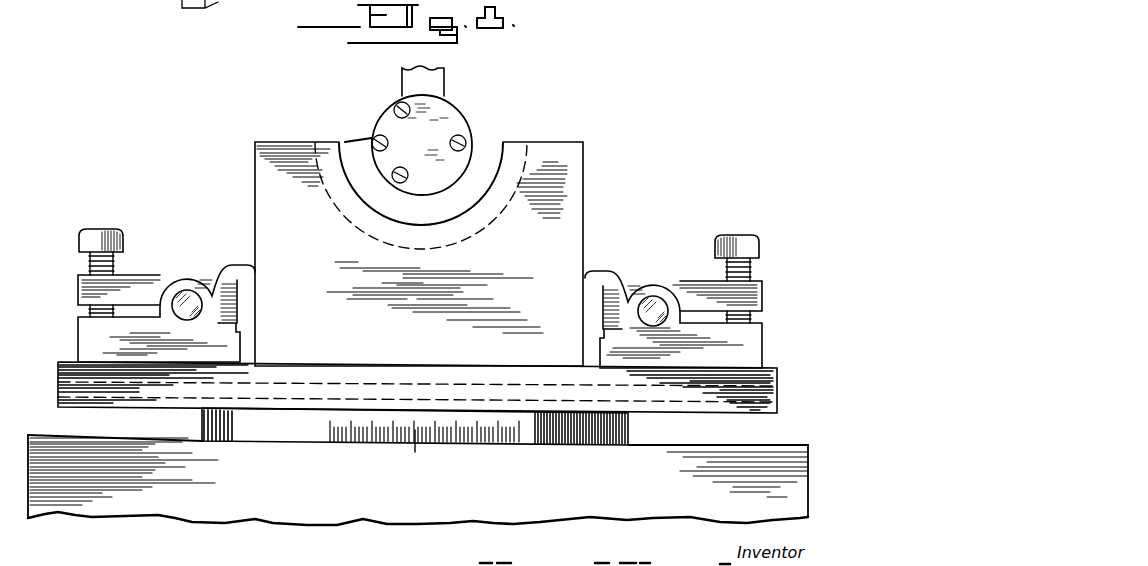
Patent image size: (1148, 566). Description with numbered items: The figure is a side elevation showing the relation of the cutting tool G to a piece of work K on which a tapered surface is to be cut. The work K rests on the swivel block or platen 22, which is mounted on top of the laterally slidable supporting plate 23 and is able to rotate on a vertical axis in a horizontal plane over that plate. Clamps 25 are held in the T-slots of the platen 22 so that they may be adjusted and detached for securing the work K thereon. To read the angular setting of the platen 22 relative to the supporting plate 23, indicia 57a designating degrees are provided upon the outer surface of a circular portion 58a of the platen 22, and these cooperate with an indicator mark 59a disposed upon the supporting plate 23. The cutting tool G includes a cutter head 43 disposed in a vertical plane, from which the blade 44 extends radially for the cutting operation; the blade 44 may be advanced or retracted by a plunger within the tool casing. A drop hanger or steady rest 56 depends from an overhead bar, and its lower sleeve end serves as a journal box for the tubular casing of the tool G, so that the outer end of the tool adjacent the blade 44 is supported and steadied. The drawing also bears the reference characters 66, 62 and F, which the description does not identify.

The member 66 is at (168, 9).
The member 62 is at (382, 24).
The work K is at (520, 241).
The cutting tool G is at (472, 145).
The drop hanger or steady rest 56 is at (427, 85).
The cutter head 43 is at (443, 127).
The blade 44 is at (360, 138).
The clamps 25 is at (112, 336).
The swivel block or platen 22 is at (85, 375).
The indicia designating degrees 57a is at (333, 430).
The indicator mark 59a is at (412, 447).
The circular portion of the platen 58a is at (548, 433).
The laterally slidable supporting plate 23 is at (773, 467).
The fixture F is at (83, 478).